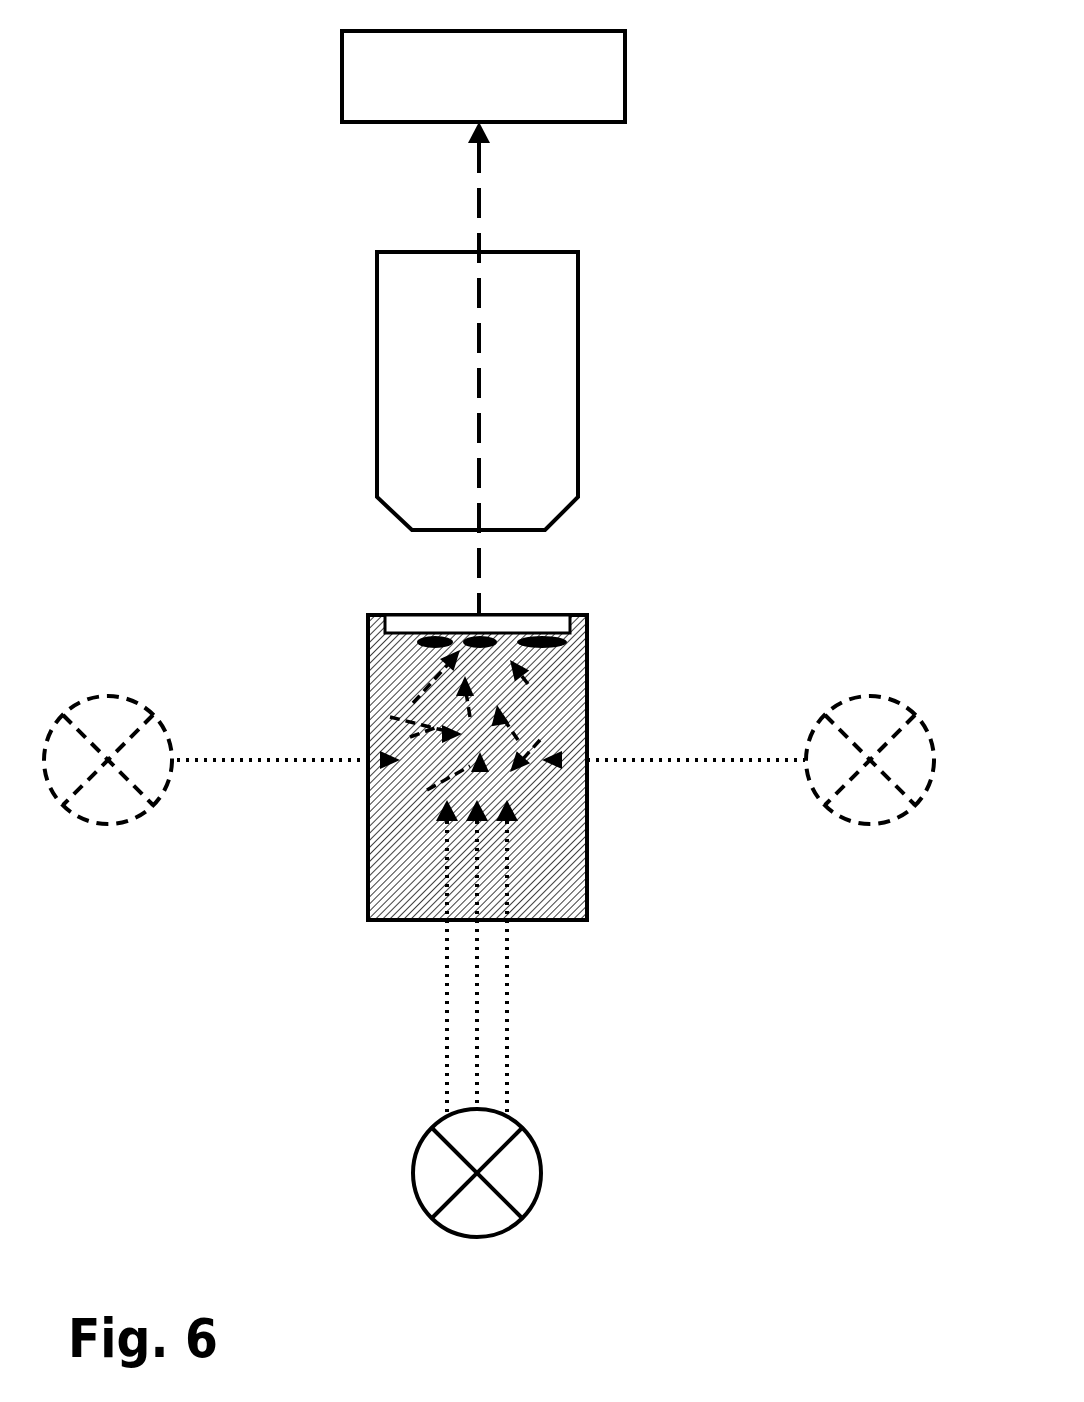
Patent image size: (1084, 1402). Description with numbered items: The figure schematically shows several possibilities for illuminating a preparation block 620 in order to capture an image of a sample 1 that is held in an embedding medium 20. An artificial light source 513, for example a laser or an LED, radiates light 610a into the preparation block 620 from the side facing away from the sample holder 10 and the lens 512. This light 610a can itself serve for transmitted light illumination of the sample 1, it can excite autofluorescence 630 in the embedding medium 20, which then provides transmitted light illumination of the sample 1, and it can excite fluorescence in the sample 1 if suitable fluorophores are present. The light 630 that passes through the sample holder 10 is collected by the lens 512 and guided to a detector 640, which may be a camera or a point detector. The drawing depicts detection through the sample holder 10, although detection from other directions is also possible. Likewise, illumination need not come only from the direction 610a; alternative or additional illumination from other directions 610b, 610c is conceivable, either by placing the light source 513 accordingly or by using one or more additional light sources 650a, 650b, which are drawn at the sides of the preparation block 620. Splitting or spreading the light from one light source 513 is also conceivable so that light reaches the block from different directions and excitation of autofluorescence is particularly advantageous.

The detector 640 is at (625, 90).
The lens 512 is at (578, 297).
The sample holder 10 is at (542, 623).
The preparation block 620 is at (641, 807).
The embedding medium 20 is at (545, 880).
The sample 1 is at (641, 807).
The autofluorescence light 630 is at (478, 577).
The illumination light 610a is at (507, 1050).
The alternative illumination direction 610b is at (223, 760).
The alternative illumination direction 610c is at (724, 760).
The additional light source 650a is at (108, 824).
The additional light source 650b is at (870, 697).
The artificial light source 513 is at (541, 1173).